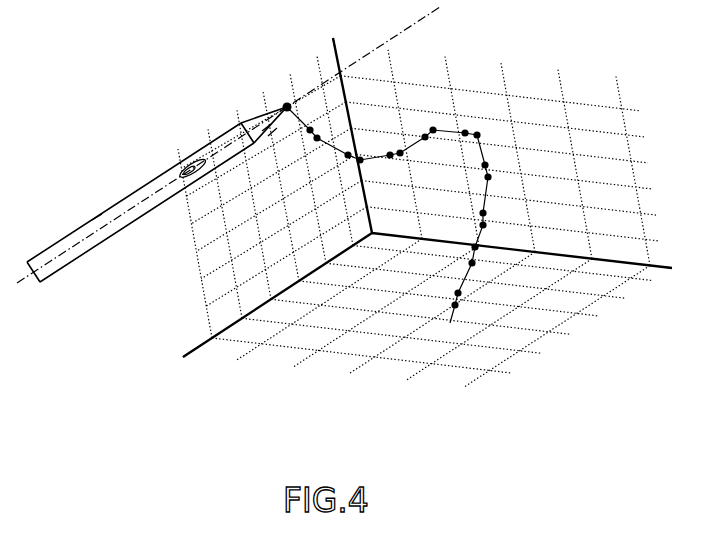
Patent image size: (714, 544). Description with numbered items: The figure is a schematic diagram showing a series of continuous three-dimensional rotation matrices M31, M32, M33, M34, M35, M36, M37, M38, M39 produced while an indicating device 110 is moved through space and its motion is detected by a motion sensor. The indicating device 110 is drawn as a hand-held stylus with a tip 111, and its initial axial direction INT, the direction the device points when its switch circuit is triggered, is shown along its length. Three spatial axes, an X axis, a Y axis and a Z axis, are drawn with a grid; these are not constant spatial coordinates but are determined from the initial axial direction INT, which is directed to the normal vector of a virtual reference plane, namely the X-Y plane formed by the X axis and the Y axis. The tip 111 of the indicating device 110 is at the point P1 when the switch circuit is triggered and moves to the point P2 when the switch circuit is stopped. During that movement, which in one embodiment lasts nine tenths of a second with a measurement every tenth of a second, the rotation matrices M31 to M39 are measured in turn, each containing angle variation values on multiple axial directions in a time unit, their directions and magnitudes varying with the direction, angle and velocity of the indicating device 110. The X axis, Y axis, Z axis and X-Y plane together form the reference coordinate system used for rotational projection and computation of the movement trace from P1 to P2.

The indicating device 110 is at (133, 192).
The tip 111 is at (280, 121).
The initial axial direction INT is at (97, 217).
The point P1 is at (284, 104).
The point P2 is at (451, 316).
The three-dimensional rotation matrix M31 is at (288, 103).
The three-dimensional rotation matrix M32 is at (320, 137).
The three-dimensional rotation matrix M33 is at (368, 165).
The three-dimensional rotation matrix M34 is at (410, 149).
The three-dimensional rotation matrix M35 is at (469, 127).
The three-dimensional rotation matrix M36 is at (488, 160).
The three-dimensional rotation matrix M37 is at (490, 177).
The three-dimensional rotation matrix M38 is at (478, 248).
The three-dimensional rotation matrix M39 is at (476, 272).
The X axis X is at (673, 272).
The Y axis Y is at (332, 36).
The Z axis Z is at (181, 365).